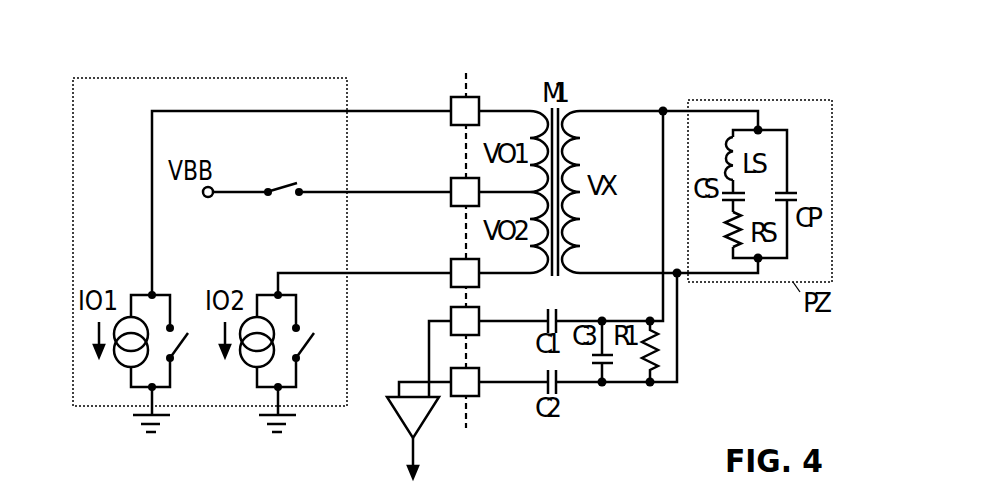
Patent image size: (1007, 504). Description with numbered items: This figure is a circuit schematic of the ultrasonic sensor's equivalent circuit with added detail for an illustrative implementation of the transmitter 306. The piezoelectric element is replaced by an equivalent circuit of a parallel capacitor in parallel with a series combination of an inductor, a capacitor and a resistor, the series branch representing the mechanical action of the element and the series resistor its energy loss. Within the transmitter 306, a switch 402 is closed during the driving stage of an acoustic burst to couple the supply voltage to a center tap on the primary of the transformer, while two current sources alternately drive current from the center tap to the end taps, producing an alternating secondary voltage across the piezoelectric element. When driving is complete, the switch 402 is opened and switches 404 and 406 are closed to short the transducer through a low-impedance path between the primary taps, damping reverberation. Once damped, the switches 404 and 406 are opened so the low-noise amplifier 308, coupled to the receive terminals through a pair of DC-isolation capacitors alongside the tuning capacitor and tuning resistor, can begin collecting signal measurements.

The transmitter 306 is at (188, 77).
The switch 402 is at (271, 178).
The switch 404 is at (192, 362).
The switch 406 is at (317, 362).
The low-noise amplifier 308 is at (403, 422).